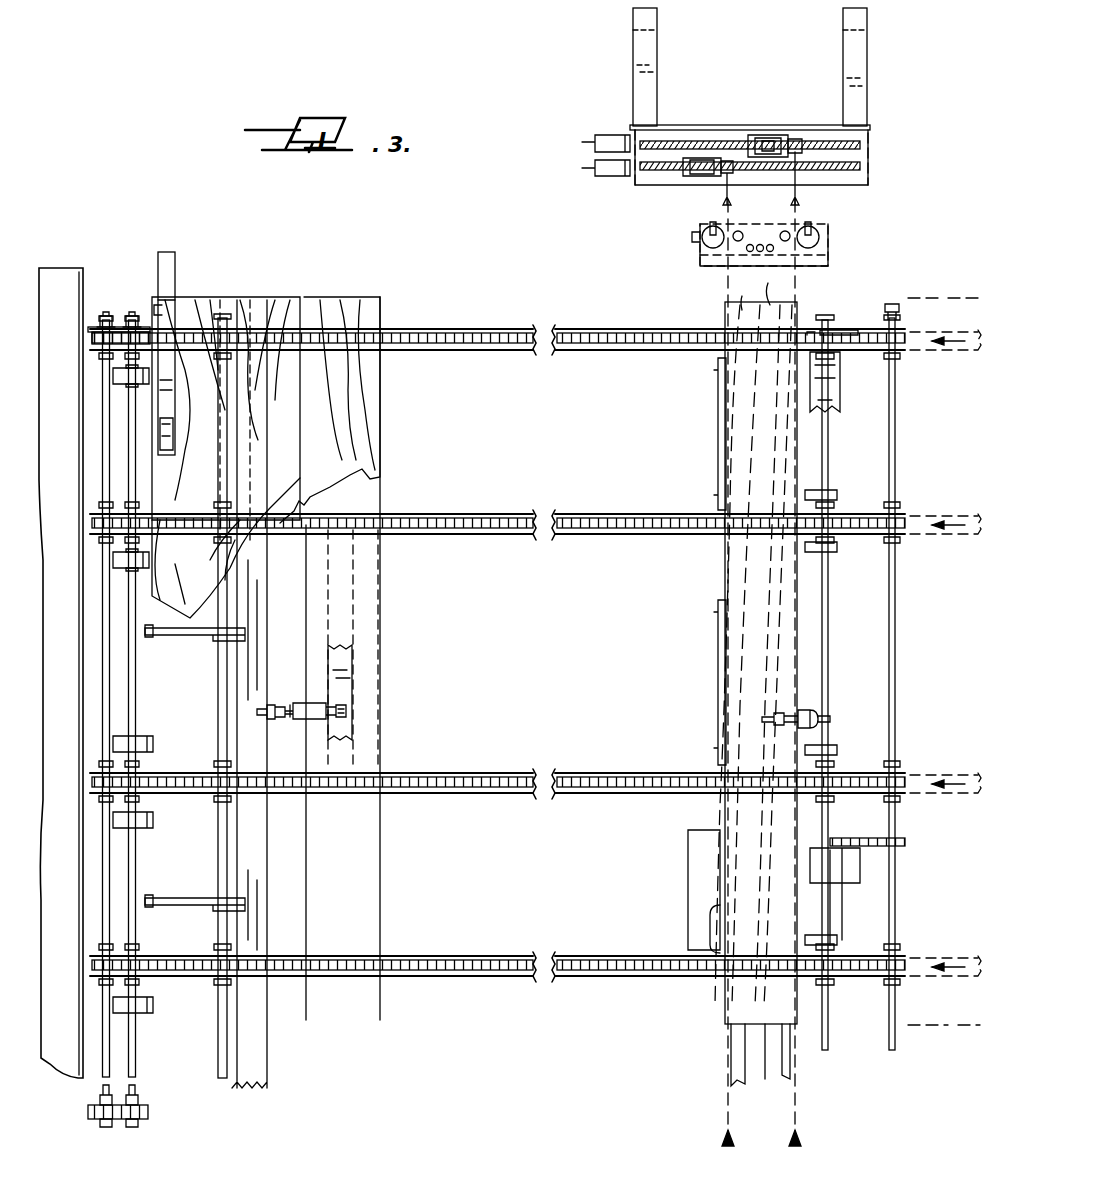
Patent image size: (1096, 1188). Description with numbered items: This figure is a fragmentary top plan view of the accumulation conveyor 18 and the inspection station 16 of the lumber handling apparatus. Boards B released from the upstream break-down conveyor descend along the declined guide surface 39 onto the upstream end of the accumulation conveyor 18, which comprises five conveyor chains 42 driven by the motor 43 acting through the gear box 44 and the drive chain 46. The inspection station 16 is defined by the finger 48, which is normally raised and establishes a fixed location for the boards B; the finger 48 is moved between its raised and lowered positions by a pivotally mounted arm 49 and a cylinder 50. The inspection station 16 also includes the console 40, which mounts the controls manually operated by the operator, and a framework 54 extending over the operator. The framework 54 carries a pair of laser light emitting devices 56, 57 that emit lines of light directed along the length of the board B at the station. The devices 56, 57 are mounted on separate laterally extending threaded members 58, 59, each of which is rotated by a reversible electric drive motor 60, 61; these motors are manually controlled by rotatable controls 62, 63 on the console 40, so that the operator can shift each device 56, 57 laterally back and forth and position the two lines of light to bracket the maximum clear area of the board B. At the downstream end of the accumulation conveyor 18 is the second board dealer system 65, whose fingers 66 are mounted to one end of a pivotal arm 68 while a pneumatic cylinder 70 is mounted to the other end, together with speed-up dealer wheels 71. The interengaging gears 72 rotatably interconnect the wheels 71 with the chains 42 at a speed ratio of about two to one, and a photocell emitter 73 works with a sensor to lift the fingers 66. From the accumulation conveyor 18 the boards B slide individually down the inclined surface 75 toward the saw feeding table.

The inspection station 16 is at (640, 244).
The accumulation conveyor 18 is at (609, 985).
The declined guide surface 39 is at (934, 350).
The console 40 is at (694, 270).
The conveyor chains 42 is at (494, 338).
The motor 43 is at (704, 934).
The gear box 44 is at (860, 870).
The drive chain 46 is at (873, 845).
The finger 48 is at (717, 417).
The pivotally mounted arm 49 is at (823, 490).
The cylinder 50 is at (804, 708).
The framework 54 is at (635, 45).
The laser light emitting device 56 is at (729, 171).
The laser light emitting device 57 is at (800, 134).
The threaded member 58 is at (670, 175).
The threaded member 59 is at (729, 142).
The reversible electric drive motor 60 is at (613, 175).
The reversible electric drive motor 61 is at (601, 135).
The rotatable control 62 is at (700, 233).
The rotatable control 63 is at (823, 230).
The second board dealer system 65 is at (117, 304).
The fingers 66 is at (153, 657).
The pivotal arm 68 is at (196, 630).
The pneumatic cylinder 70 is at (306, 704).
The speed-up dealer wheels 71 is at (149, 813).
The interengaging gears 72 is at (119, 1116).
The photocell emitter 73 is at (176, 430).
The inclined surface 75 is at (54, 283).
The boards B is at (250, 305).